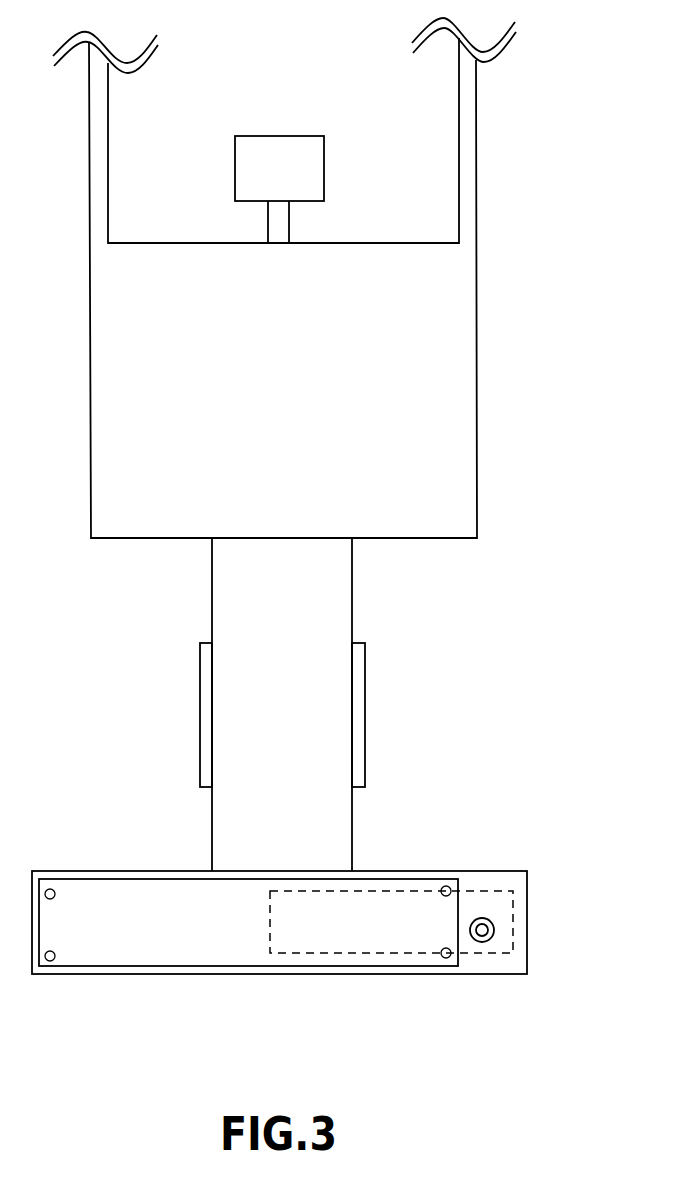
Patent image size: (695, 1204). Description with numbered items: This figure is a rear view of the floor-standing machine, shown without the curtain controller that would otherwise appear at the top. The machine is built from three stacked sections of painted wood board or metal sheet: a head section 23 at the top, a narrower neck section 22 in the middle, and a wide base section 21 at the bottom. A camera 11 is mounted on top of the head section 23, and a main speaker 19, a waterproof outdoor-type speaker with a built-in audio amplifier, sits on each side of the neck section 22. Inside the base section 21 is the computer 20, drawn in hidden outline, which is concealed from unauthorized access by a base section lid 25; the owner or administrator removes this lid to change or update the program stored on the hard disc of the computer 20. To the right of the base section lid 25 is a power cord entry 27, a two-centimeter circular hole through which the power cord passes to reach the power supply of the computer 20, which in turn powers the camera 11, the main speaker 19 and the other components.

The camera 11 is at (282, 167).
The main speaker 19 is at (203, 722).
The computer 20 is at (390, 922).
The base section 21 is at (522, 867).
The neck section 22 is at (251, 613).
The head section 23 is at (443, 397).
The base section lid 25 is at (250, 933).
The power cord entry 27 is at (486, 942).